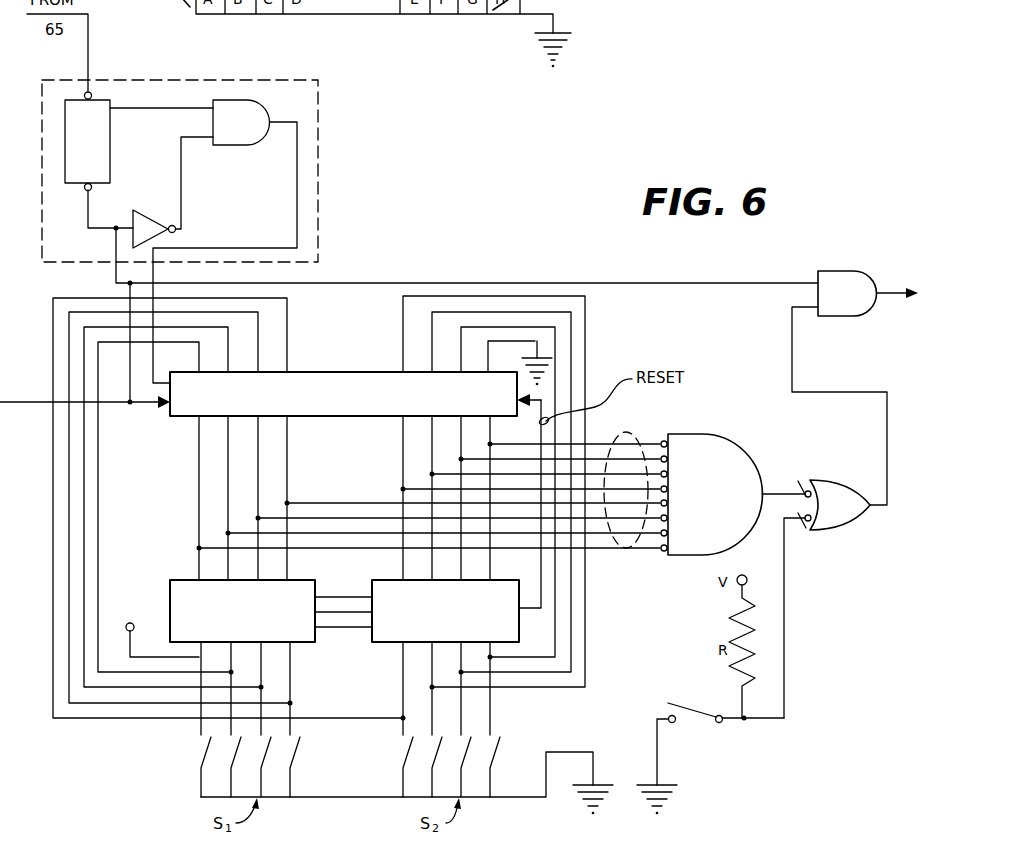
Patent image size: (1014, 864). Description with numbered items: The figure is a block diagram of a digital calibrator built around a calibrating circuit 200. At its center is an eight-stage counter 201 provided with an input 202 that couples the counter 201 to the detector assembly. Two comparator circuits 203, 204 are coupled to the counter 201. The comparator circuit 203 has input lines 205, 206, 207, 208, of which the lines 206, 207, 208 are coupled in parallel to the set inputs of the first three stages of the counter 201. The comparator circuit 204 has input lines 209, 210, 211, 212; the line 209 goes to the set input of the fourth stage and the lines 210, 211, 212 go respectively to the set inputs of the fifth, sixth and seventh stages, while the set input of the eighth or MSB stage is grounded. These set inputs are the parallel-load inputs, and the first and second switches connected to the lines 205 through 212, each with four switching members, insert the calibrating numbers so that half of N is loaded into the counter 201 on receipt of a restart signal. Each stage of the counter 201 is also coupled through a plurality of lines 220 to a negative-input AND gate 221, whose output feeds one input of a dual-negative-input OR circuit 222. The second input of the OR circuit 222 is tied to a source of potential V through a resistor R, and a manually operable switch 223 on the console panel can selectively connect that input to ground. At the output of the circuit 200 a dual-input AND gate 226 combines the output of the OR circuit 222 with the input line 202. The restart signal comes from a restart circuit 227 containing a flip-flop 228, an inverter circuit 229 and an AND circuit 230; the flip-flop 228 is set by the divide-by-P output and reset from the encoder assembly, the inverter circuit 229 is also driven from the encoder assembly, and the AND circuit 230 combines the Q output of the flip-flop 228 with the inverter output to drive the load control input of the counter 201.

The calibrating circuit 200 is at (451, 266).
The eight-stage counter 201 is at (312, 372).
The input 202 is at (114, 405).
The comparator circuit 203 is at (196, 592).
The comparator circuit 204 is at (376, 582).
The input line 205 is at (196, 651).
The input line 206 is at (235, 659).
The input line 207 is at (267, 675).
The input line 208 is at (291, 692).
The input line 209 is at (397, 656).
The input line 210 is at (427, 665).
The input line 211 is at (467, 702).
The input line 212 is at (495, 717).
The lines 220 is at (628, 426).
The negative input AND gate 221 is at (720, 445).
The dual-negative input OR circuit 222 is at (826, 481).
The switch 223 is at (702, 722).
The dual-input AND gate 226 is at (832, 271).
The restart circuit 227 is at (213, 231).
The flip-flop 228 is at (110, 148).
The inverter circuit 229 is at (156, 228).
The AND circuit 230 is at (232, 146).